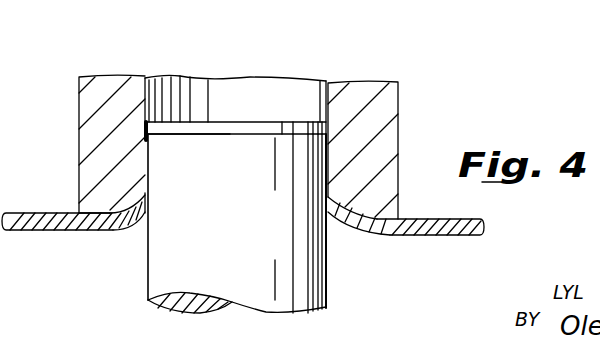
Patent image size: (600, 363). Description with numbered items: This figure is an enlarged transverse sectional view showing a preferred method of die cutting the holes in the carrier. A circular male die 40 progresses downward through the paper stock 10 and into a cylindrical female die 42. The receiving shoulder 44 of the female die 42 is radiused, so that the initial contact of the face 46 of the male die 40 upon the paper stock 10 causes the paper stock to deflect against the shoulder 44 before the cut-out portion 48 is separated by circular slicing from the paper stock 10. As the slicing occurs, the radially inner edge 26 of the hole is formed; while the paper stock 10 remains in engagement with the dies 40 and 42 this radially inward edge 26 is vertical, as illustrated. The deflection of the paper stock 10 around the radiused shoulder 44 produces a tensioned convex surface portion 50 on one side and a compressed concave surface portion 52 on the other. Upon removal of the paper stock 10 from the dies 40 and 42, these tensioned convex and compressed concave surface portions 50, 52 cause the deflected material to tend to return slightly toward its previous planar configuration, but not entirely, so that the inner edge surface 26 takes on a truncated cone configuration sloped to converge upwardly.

The paper stock 10 is at (40, 213).
The radially inner edge 26 is at (147, 203).
The circular male die 40 is at (143, 283).
The cylindrical female die 42 is at (79, 103).
The receiving shoulder 44 is at (122, 230).
The face 46 is at (223, 137).
The cut-out portion 48 is at (255, 123).
The tensioned convex surface portion 50 is at (347, 226).
The compressed concave surface portion 52 is at (342, 203).